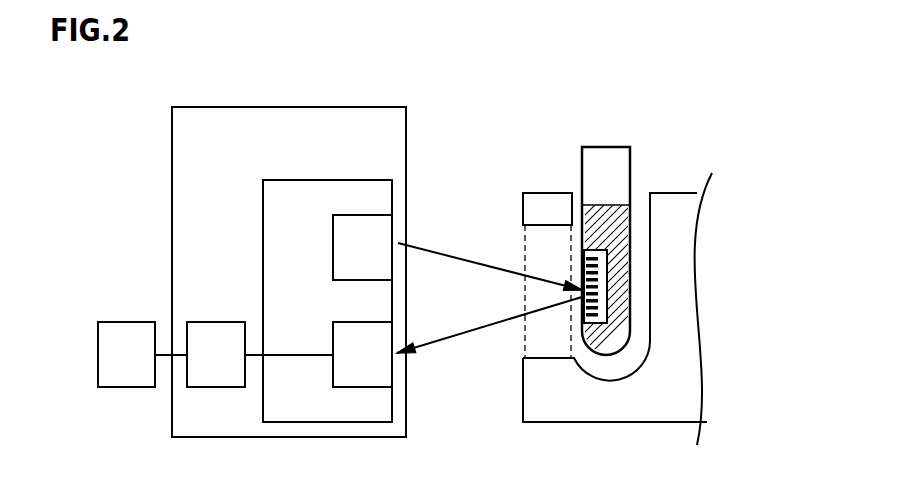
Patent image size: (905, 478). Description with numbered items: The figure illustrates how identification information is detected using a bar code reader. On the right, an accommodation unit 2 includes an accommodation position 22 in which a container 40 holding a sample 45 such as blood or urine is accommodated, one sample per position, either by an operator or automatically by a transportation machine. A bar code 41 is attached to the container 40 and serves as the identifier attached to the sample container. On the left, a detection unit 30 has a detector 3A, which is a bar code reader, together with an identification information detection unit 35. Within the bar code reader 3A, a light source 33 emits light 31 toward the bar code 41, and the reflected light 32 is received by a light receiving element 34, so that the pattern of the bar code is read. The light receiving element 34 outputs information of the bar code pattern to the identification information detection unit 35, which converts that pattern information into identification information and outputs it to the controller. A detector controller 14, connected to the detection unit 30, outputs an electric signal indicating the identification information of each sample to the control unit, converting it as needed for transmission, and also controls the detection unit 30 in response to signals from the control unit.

The accommodation unit 2 is at (678, 193).
The detector controller 14 is at (126, 322).
The accommodation position 22 is at (647, 253).
The detection unit 30 is at (288, 107).
The bar code reader 3A is at (286, 180).
The light 31 is at (462, 262).
The reflected light 32 is at (458, 336).
The light source 33 is at (333, 246).
The light receiving element 34 is at (333, 331).
The identification information detection unit 35 is at (215, 322).
The container 40 is at (607, 147).
The bar code 41 is at (607, 295).
The sample 45 is at (632, 275).